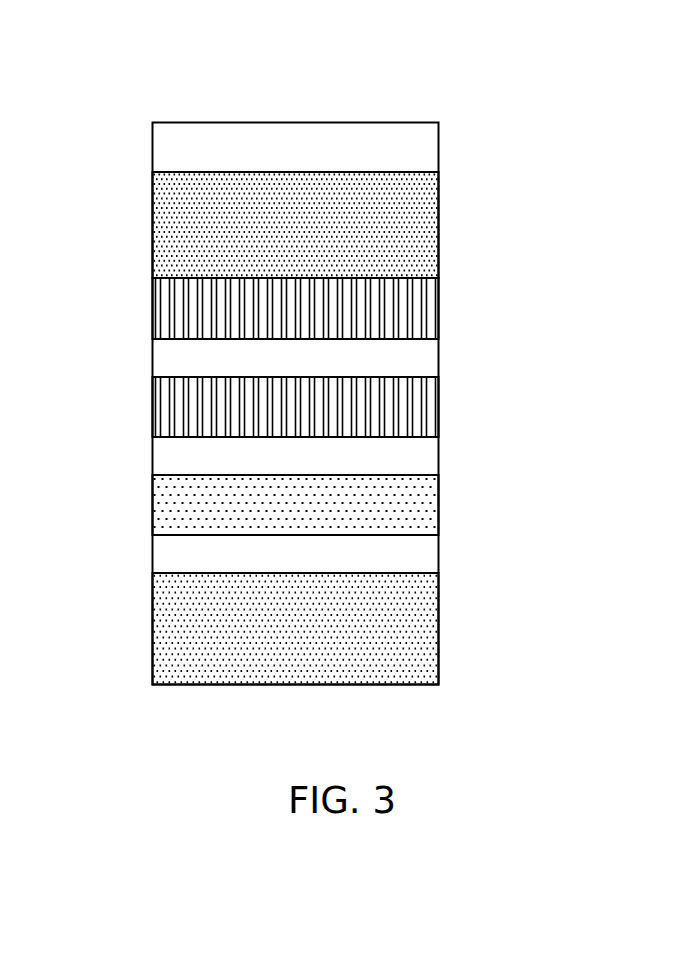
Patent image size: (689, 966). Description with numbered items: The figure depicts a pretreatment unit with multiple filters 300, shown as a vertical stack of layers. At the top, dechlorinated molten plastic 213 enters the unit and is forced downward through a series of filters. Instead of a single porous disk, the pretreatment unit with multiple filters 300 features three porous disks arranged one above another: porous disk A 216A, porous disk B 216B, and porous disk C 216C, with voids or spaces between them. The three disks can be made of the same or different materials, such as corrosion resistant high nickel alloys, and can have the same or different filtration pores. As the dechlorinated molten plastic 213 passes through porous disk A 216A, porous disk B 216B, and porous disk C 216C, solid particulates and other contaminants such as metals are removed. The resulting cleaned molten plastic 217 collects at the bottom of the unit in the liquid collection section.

The pretreatment unit with multiple filters 300 is at (146, 72).
The dechlorinated molten plastic 213 is at (438, 225).
The porous disk A 216A is at (438, 308).
The porous disk B 216B is at (438, 405).
The porous disk C 216C is at (438, 507).
The cleaned molten plastic 217 is at (438, 632).